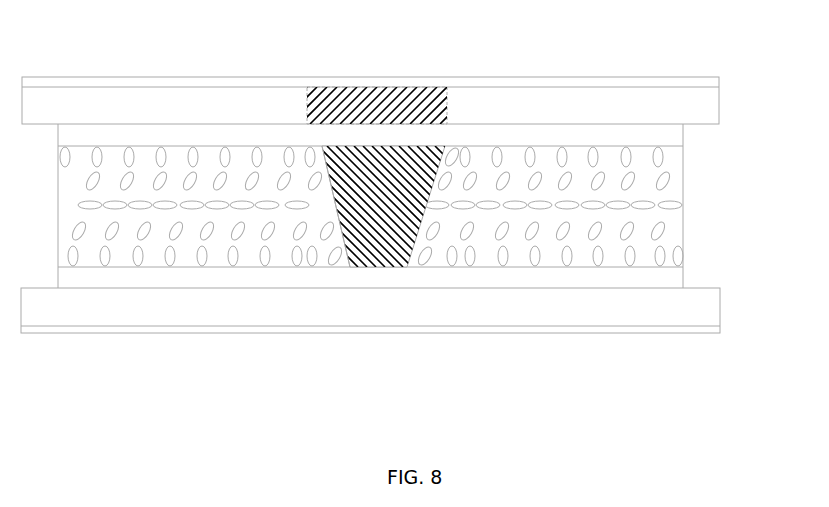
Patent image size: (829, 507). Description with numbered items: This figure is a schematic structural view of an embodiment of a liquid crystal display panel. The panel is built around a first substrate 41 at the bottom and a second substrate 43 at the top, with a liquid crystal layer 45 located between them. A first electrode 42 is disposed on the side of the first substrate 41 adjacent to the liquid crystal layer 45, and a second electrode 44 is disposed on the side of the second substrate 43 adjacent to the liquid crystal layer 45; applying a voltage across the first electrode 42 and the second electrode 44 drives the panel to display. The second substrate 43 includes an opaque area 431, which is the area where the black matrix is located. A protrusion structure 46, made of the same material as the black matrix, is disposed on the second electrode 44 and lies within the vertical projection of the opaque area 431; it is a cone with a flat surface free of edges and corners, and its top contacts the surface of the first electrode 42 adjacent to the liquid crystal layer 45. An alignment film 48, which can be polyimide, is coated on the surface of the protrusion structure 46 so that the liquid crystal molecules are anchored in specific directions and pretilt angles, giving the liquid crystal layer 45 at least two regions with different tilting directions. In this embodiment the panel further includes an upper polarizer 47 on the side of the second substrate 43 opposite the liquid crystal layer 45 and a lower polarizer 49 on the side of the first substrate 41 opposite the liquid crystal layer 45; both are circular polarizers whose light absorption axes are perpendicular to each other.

The first substrate 41 is at (697, 302).
The first electrode 42 is at (477, 273).
The second substrate 43 is at (646, 103).
The opaque area 431 is at (342, 92).
The second electrode 44 is at (453, 138).
The liquid crystal layer 45 is at (677, 192).
The protrusion structure 46 is at (407, 148).
The upper polarizer 47 is at (593, 83).
The alignment film 48 is at (342, 262).
The lower polarizer 49 is at (630, 327).